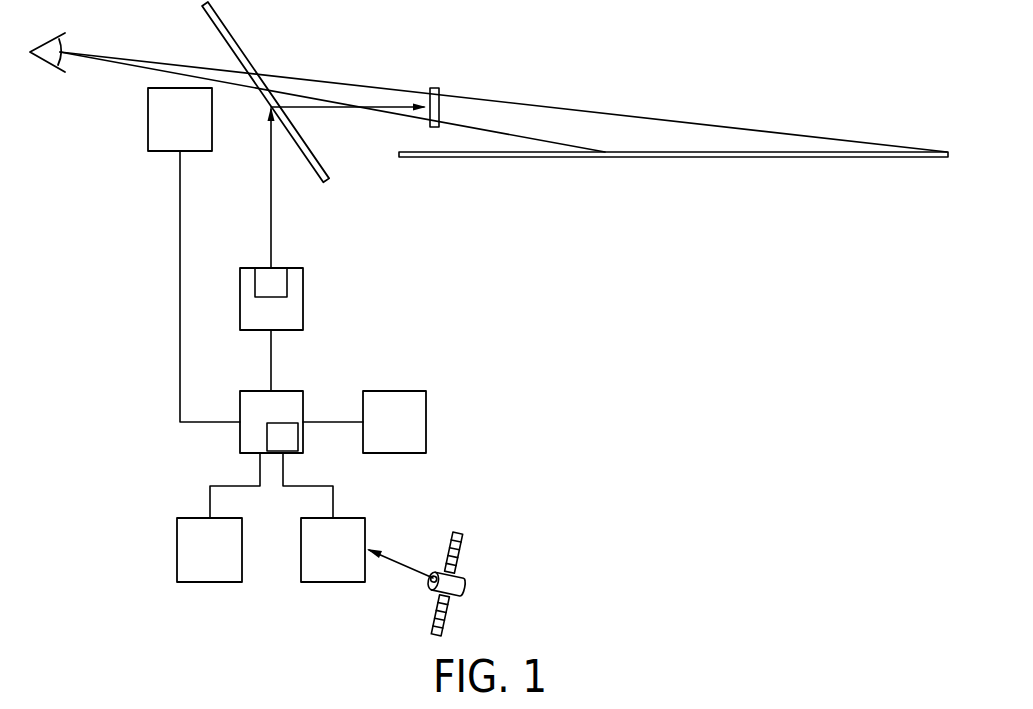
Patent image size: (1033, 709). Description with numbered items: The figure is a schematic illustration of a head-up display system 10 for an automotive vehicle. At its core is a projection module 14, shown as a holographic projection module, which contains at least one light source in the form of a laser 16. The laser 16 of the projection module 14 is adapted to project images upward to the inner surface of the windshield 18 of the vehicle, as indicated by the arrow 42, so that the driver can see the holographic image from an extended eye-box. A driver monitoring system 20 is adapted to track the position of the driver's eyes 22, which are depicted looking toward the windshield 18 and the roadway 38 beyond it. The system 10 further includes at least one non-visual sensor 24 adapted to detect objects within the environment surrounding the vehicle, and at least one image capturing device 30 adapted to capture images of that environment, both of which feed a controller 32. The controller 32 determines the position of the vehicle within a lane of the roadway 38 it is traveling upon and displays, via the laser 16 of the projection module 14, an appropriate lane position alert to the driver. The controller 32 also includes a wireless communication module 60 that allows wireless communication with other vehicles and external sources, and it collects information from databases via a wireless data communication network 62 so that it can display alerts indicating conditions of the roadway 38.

The head-up display system 10 is at (585, 343).
The projection module 14 is at (259, 325).
The laser 16 is at (259, 294).
The windshield 18 is at (242, 48).
The driver monitoring system 20 is at (168, 131).
The driver's eyes 22 is at (45, 62).
The non-visual sensor 24 is at (198, 560).
The image capturing device 30 is at (383, 434).
The controller 32 is at (259, 416).
The roadway 38 is at (725, 157).
The arrow 42 is at (271, 222).
The wireless communication module 60 is at (270, 449).
The wireless data communication network 62 is at (321, 560).